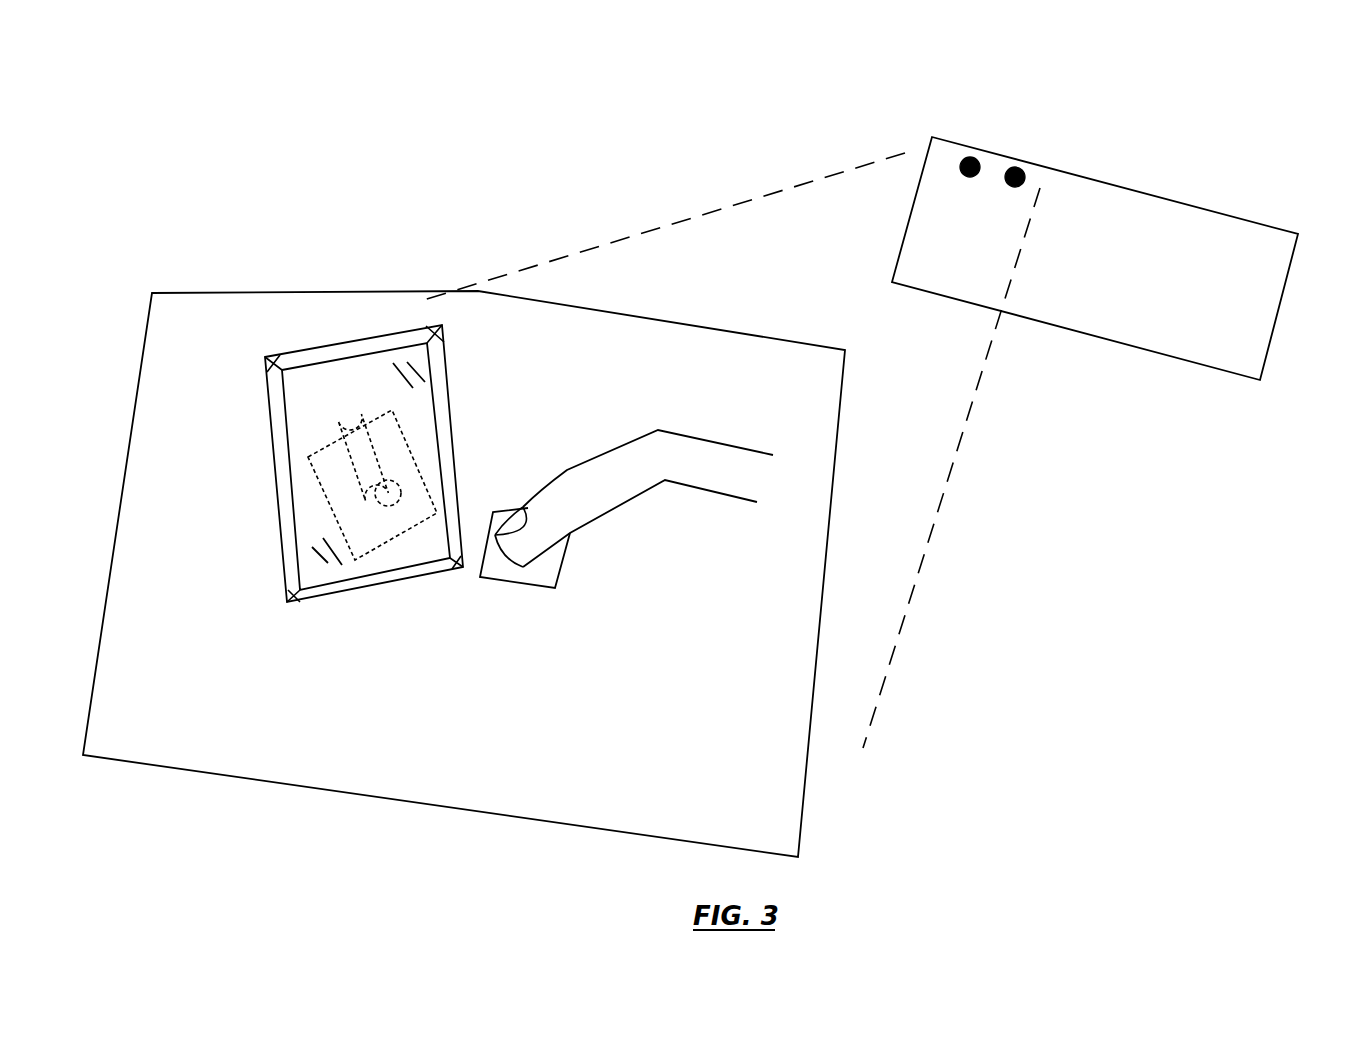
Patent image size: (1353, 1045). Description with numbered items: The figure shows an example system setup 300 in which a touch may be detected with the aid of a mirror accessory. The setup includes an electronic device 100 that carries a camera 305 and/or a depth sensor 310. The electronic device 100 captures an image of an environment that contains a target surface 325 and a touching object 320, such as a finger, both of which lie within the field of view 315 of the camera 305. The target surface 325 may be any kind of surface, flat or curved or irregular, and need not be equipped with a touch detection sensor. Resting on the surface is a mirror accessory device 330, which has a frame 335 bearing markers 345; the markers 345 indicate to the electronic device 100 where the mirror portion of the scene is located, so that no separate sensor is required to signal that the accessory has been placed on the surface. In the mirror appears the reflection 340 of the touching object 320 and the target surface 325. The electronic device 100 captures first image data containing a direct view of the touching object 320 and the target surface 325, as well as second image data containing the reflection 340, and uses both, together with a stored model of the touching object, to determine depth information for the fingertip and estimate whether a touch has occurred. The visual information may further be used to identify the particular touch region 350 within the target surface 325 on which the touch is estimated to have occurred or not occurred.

The system setup 300 is at (257, 122).
The electronic device 100 is at (1275, 318).
The camera 305 is at (983, 163).
The depth sensor 310 is at (1030, 173).
The field of view 315 is at (760, 200).
The touching object 320 is at (683, 435).
The target surface 325 is at (567, 745).
The mirror accessory device 330 is at (367, 471).
The frame 335 is at (282, 457).
The reflection 340 is at (317, 572).
The markers 345 is at (440, 337).
The touch region 350 is at (520, 572).